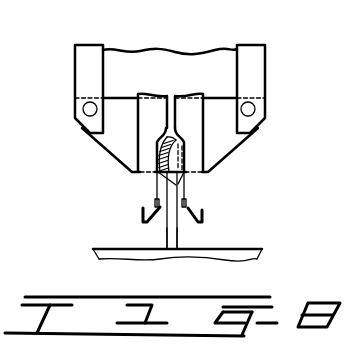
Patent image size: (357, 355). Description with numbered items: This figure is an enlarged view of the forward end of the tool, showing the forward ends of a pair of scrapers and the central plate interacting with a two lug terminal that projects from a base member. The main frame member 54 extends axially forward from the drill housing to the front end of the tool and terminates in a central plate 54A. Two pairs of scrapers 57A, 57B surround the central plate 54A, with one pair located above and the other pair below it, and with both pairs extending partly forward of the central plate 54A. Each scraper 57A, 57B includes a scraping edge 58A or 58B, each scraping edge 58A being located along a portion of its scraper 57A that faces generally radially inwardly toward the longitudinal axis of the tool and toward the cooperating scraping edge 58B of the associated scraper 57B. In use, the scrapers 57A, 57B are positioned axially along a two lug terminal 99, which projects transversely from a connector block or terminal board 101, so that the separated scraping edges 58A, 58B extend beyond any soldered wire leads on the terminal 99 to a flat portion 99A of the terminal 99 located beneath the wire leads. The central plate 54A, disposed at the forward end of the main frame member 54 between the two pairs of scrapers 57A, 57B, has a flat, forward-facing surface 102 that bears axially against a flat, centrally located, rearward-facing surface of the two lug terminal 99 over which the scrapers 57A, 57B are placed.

The main frame member 54 is at (257, 65).
The central plate 54A is at (224, 146).
The flat, forward-facing surface 102 is at (157, 192).
The two lug terminal 99 is at (175, 195).
The flat portion 99A is at (183, 240).
The scraping edge 58A is at (155, 200).
The scraping edge 58B is at (198, 203).
The scraper 57A is at (142, 220).
The scraper 57B is at (203, 220).
The terminal board 101 is at (113, 256).